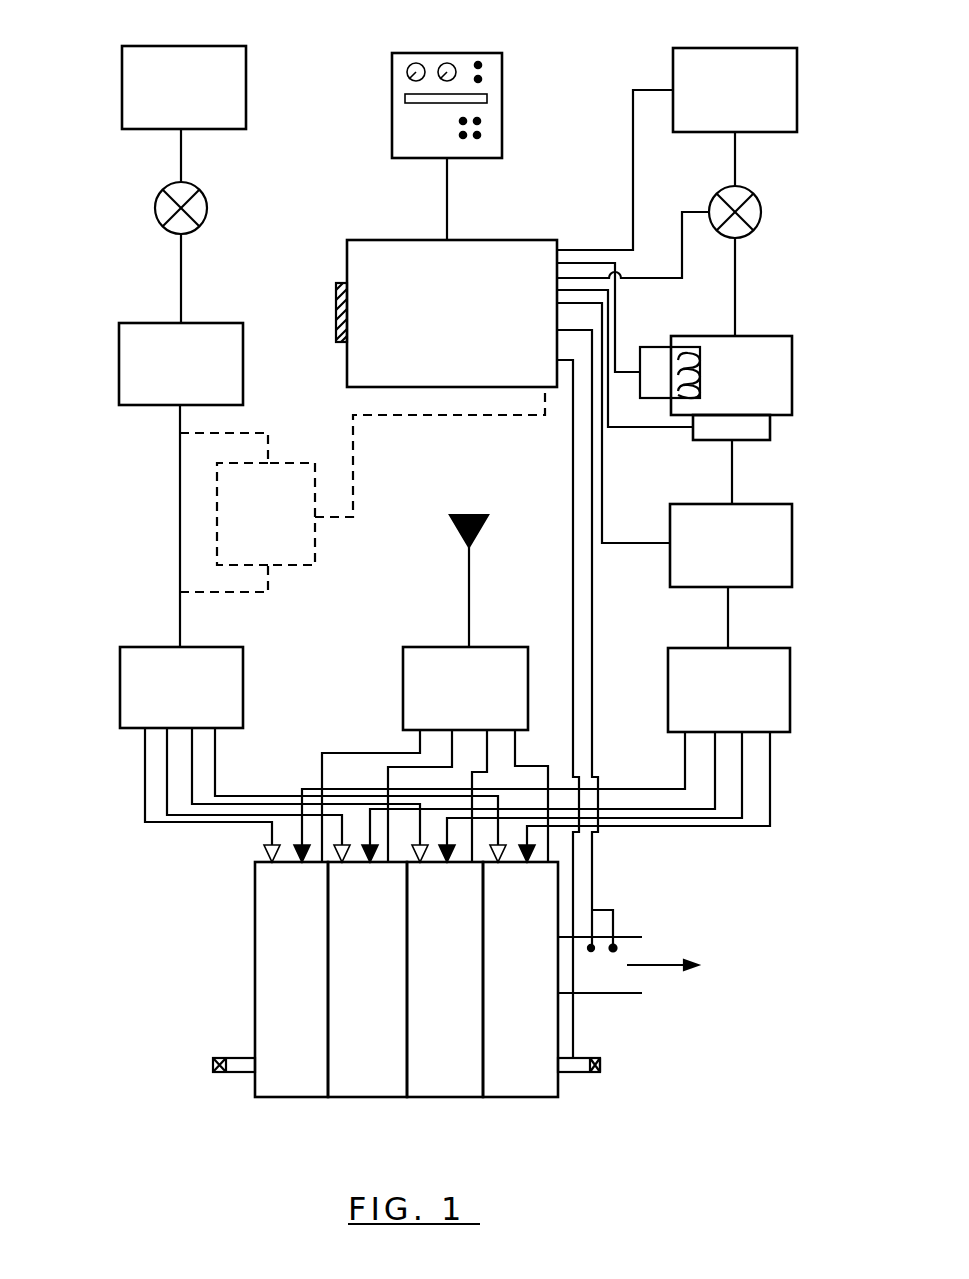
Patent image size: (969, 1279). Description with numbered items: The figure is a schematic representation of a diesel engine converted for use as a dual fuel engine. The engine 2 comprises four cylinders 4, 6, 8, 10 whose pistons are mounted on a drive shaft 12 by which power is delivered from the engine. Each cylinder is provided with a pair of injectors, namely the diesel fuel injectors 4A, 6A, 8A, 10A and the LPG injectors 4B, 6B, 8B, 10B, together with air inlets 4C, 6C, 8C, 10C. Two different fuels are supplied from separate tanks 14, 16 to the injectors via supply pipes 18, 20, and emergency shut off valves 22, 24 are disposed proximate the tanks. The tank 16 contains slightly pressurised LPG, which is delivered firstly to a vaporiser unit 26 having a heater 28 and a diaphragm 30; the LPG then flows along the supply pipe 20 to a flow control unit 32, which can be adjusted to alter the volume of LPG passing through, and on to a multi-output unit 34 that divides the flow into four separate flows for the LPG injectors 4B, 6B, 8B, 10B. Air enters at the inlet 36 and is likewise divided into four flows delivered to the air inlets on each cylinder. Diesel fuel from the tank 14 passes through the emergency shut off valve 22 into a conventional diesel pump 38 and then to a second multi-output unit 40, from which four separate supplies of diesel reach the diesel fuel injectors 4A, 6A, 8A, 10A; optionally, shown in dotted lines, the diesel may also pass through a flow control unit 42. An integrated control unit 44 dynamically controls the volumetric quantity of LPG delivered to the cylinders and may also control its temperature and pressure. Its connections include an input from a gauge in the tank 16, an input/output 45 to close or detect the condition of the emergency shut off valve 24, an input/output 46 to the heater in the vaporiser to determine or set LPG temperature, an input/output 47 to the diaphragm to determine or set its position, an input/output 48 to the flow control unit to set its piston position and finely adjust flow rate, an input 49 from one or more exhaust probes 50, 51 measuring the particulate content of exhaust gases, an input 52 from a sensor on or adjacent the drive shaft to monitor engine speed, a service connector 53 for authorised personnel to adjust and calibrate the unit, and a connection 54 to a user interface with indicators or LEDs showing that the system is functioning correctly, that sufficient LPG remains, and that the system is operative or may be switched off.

The engine 2 is at (333, 1010).
The cylinder 4 is at (290, 1070).
The cylinder 6 is at (365, 1078).
The cylinder 8 is at (443, 1078).
The cylinder 10 is at (528, 1080).
The drive shaft 12 is at (242, 1068).
The tank 14 is at (135, 95).
The tank 16 is at (688, 73).
The supply pipe 18 is at (180, 288).
The supply pipe 20 is at (735, 162).
The emergency shut off valve 22 is at (155, 210).
The emergency shut off valve 24 is at (761, 216).
The vaporiser unit 26 is at (792, 380).
The heater 28 is at (703, 367).
The diaphragm 30 is at (750, 427).
The flow control unit 32 is at (771, 523).
The multi-output unit 34 is at (762, 680).
The air inlet 36 is at (450, 530).
The diesel pump 38 is at (135, 370).
The second multi-output unit 40 is at (143, 698).
The flow control unit 42 is at (227, 515).
The integrated control unit 44 is at (345, 268).
The input/output connection 45 is at (682, 212).
The input/output connection 46 is at (615, 345).
The input/output connection 47 is at (635, 430).
The input/output connection 48 is at (622, 547).
The input connection 49 is at (592, 678).
The exhaust probe 50 is at (592, 946).
The exhaust probe 51 is at (614, 948).
The input connection 52 is at (574, 556).
The service connector 53 is at (336, 345).
The user interface connection 54 is at (447, 213).
The diesel fuel injector 4A is at (265, 853).
The diesel fuel injector 6A is at (308, 860).
The diesel fuel injector 8A is at (336, 862).
The diesel fuel injector 10A is at (366, 862).
The LPG injector 4B is at (417, 862).
The LPG injector 6B is at (444, 862).
The LPG injector 8B is at (497, 862).
The LPG injector 10B is at (527, 862).
The air inlet 4C is at (330, 750).
The air inlet 6C is at (415, 767).
The air inlet 8C is at (487, 752).
The air inlet 10C is at (578, 776).